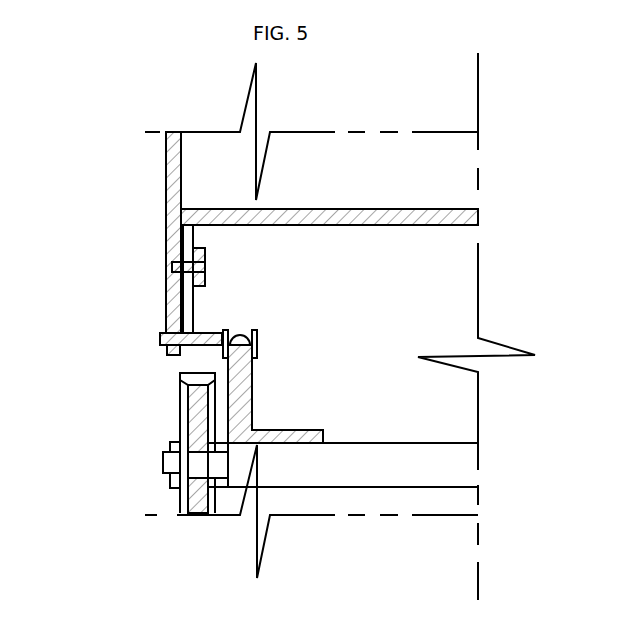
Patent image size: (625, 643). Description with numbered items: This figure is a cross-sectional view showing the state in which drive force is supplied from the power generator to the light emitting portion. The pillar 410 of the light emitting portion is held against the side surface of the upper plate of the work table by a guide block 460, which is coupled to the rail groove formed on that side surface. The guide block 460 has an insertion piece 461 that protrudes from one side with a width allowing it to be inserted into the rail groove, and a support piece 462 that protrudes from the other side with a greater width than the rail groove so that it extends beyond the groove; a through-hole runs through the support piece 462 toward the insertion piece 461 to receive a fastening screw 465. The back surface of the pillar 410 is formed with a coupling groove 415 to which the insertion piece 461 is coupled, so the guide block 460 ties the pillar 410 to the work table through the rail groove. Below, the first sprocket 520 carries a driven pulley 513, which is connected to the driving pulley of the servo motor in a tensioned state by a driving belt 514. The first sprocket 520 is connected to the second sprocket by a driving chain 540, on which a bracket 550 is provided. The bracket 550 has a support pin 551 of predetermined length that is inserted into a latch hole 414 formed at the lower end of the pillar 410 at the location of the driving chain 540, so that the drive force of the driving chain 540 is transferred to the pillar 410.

The pillar 410 is at (176, 180).
The latch hole 414 is at (167, 352).
The coupling groove 415 is at (183, 250).
The guide block 460 is at (260, 278).
The insertion piece 461 is at (203, 284).
The support piece 462 is at (205, 254).
The fastening screw 465 is at (205, 268).
The driven pulley 513 is at (188, 437).
The driving belt 514 is at (180, 376).
The first sprocket 520 is at (246, 393).
The driving chain 540 is at (258, 334).
The bracket 550 is at (184, 331).
The support pin 551 is at (163, 340).